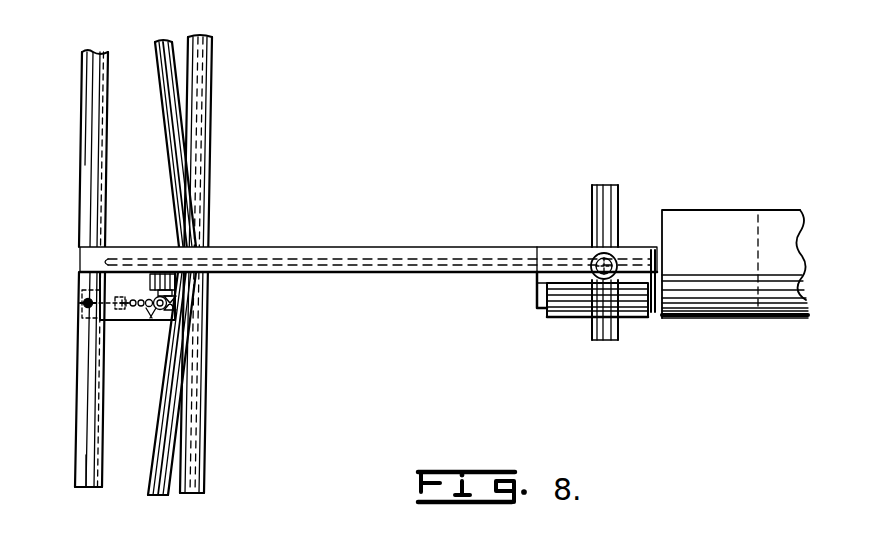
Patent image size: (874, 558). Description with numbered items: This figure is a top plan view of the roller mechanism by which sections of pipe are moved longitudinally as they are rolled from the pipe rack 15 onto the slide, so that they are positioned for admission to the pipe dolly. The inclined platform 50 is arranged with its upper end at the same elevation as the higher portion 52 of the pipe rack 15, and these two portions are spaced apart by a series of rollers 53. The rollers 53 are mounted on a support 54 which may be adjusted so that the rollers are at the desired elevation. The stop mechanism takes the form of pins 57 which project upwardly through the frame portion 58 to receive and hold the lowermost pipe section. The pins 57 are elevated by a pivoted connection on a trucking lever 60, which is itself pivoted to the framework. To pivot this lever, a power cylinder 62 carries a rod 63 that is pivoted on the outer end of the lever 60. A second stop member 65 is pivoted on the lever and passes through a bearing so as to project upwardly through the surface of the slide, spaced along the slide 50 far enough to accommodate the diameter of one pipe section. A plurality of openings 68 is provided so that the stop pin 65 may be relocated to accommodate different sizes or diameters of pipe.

The pipe rack 15 is at (760, 320).
The inclined platform 50 is at (372, 272).
The higher portion of the pipe rack 52 is at (784, 220).
The rollers 53 is at (562, 320).
The support 54 is at (613, 255).
The pins 57 is at (84, 304).
The frame portion 58 is at (78, 352).
The trucking lever 60 is at (122, 312).
The power cylinder 62 is at (168, 301).
The rod 63 is at (174, 306).
The second stop member 65 is at (150, 312).
The openings 68 is at (133, 297).